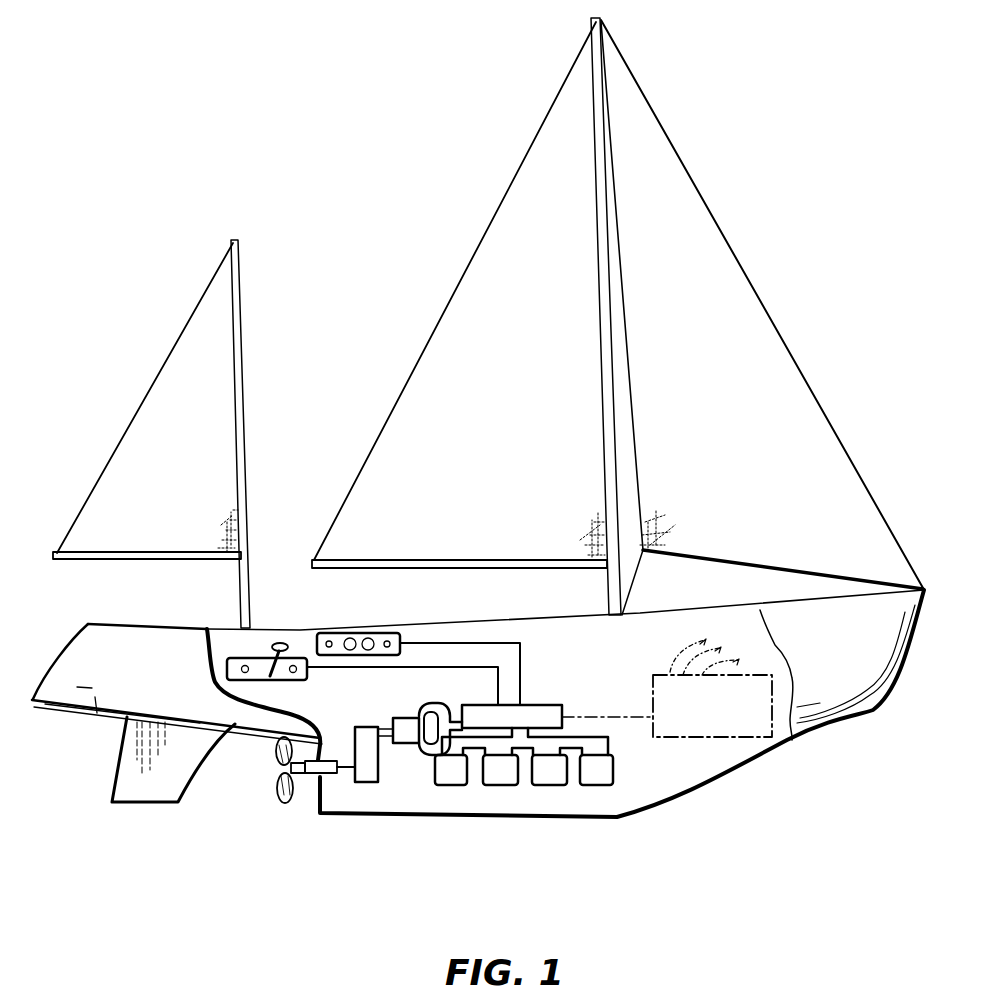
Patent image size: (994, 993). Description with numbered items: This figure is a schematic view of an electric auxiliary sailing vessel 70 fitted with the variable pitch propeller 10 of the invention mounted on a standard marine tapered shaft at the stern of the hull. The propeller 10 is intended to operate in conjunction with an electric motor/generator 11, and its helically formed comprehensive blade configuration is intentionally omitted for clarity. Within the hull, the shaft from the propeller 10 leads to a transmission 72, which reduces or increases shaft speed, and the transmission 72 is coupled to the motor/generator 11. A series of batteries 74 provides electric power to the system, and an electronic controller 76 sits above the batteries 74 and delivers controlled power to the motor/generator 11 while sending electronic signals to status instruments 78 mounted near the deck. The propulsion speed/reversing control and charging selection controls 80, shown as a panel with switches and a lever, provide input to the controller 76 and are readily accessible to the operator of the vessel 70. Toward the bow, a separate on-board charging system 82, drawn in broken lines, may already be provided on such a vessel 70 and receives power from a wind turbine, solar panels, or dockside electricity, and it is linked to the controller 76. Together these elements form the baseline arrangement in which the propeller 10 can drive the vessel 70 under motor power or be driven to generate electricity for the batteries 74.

The variable pitch propeller 10 is at (267, 783).
The electric motor/generator 11 is at (405, 745).
The sailing vessel 70 is at (93, 712).
The transmission 72 is at (370, 783).
The batteries 74 is at (507, 795).
The electronic controller 76 is at (545, 710).
The status instruments 78 is at (337, 633).
The propulsion speed/reversing control and charging selection controls 80 is at (227, 660).
The on-board charging system 82 is at (777, 740).